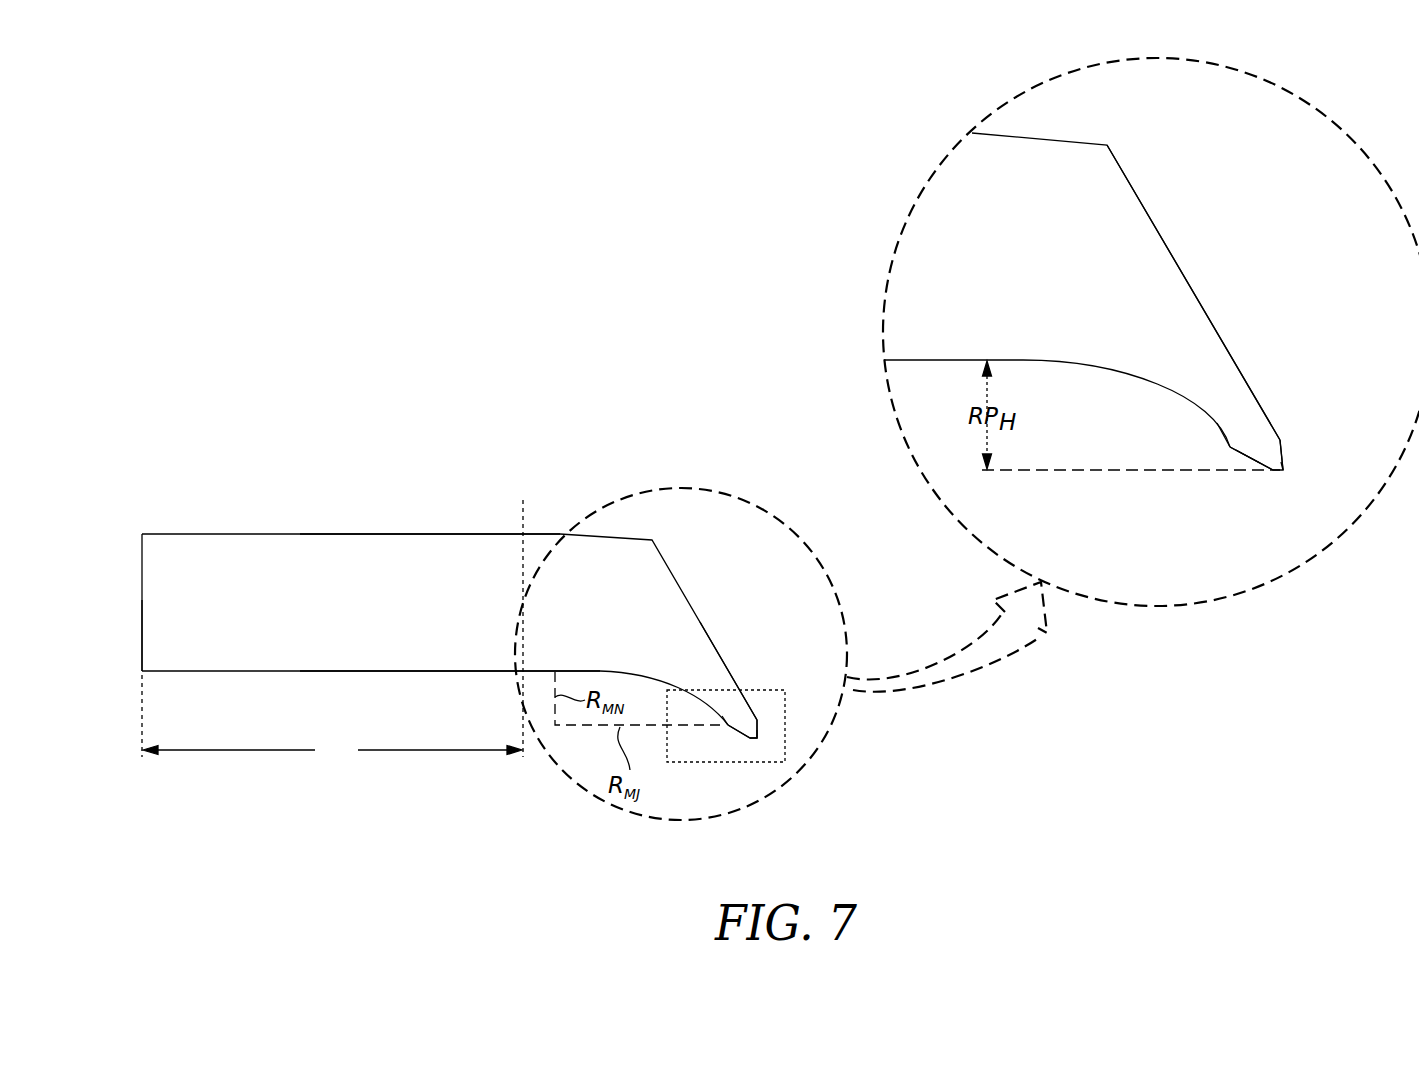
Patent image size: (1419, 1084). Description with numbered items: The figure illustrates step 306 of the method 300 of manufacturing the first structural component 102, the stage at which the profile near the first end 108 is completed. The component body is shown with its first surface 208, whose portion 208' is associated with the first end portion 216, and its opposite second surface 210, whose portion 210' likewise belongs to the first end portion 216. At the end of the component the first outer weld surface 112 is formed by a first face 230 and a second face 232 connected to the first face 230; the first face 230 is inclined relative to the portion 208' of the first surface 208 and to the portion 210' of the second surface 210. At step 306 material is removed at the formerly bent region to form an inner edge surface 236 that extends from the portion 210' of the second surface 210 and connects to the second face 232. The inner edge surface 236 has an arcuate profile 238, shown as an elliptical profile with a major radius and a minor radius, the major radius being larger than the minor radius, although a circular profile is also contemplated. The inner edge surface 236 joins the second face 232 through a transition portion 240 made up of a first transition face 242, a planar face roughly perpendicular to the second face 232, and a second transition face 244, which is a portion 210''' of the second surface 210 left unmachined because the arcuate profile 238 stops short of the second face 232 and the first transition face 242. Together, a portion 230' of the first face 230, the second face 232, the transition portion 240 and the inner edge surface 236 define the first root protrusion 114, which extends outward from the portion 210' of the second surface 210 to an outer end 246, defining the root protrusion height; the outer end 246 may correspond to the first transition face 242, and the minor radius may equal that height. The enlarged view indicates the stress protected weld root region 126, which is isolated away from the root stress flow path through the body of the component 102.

The method 300 is at (242, 142).
The step 306 is at (319, 229).
The first structural component 102 is at (499, 302).
The first end 108 is at (126, 687).
The first surface 208 is at (449, 595).
The portion of the first surface 208' is at (421, 487).
The second surface 210 is at (435, 705).
The portion of the second surface 210' is at (442, 701).
The portion of the second surface 210''' is at (1180, 496).
The first end portion 216 is at (332, 632).
The first face 230 is at (1126, 286).
The portion of the first face 230' is at (752, 671).
The first outer weld surface 112 is at (1196, 262).
The first root protrusion 114 is at (698, 709).
The stress protected weld root region 126 is at (787, 728).
The second face 232 is at (760, 740).
The inner edge surface 236 is at (1131, 389).
The arcuate profile 238 is at (1168, 402).
The transition portion 240 is at (1230, 475).
The first transition face 242 is at (758, 736).
The second transition face 244 is at (741, 736).
The outer end 246 is at (1283, 472).